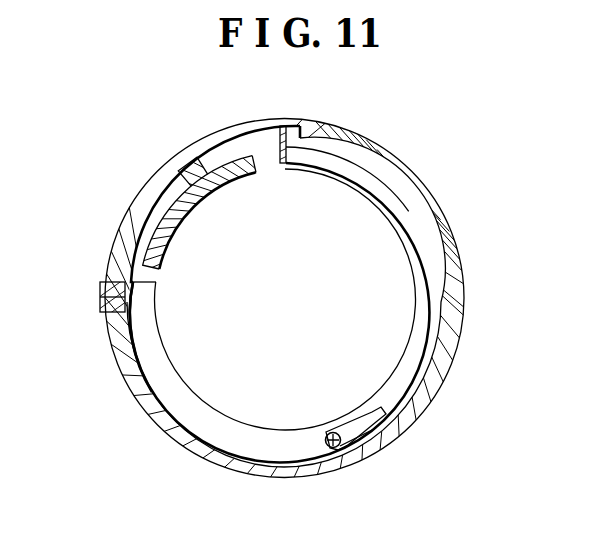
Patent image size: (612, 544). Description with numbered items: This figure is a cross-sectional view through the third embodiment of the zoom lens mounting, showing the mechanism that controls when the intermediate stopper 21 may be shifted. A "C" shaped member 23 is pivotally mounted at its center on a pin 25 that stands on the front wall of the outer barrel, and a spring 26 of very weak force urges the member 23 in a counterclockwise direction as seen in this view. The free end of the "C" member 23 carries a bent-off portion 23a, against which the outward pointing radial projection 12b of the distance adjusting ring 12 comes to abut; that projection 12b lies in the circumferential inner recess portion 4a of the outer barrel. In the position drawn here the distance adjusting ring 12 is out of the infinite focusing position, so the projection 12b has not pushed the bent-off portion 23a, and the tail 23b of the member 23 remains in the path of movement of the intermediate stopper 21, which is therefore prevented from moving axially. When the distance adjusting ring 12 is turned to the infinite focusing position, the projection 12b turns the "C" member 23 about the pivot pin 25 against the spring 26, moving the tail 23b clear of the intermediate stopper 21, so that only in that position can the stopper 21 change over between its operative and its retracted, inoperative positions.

The circumferential inner recess portion 4a is at (229, 143).
The distance adjusting ring 12 is at (173, 200).
The radial projection 12b is at (181, 162).
The intermediate stopper 21 is at (100, 297).
The "C" shaped member 23 is at (411, 230).
The bent-off portion 23a is at (280, 146).
The tail 23b is at (132, 324).
The pin 25 is at (335, 467).
The spring 26 is at (374, 455).